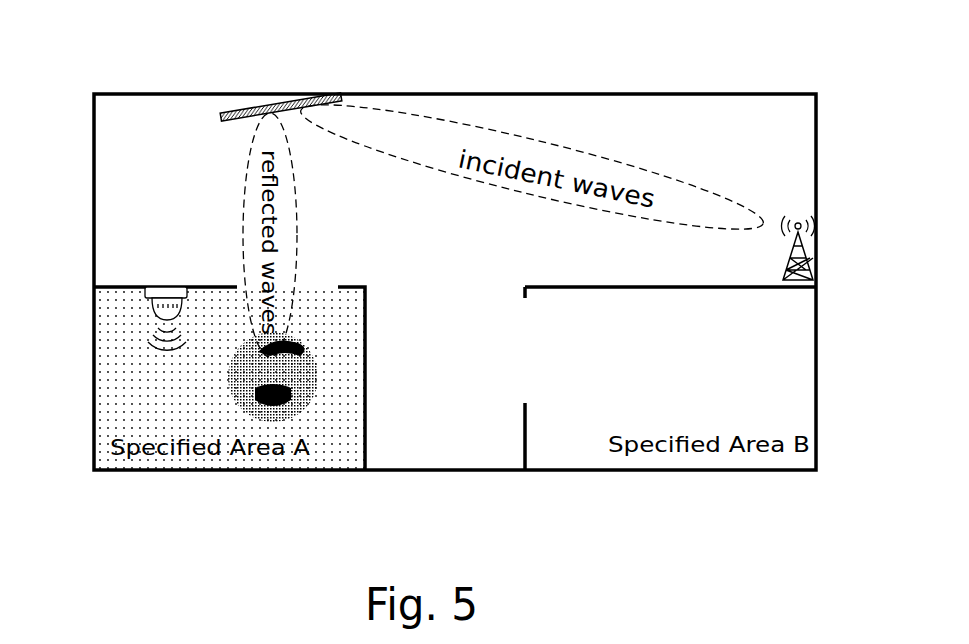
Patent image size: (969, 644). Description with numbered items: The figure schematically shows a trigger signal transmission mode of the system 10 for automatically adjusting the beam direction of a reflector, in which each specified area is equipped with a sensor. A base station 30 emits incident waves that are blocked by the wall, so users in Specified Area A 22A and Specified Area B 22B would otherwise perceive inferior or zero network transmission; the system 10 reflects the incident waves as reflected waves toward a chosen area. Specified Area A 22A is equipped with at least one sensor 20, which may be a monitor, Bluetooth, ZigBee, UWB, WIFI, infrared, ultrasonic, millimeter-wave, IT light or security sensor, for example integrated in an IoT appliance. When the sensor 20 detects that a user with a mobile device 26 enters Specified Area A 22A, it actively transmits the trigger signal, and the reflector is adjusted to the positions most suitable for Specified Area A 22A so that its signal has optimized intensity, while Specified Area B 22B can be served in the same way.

The system for automatically adjusting the beam direction of a reflector 10 is at (262, 108).
The sensor 20 is at (147, 300).
The Specified Area A 22A is at (217, 470).
The Specified Area B 22B is at (693, 470).
The mobile device 26 is at (327, 367).
The base station 30 is at (812, 258).